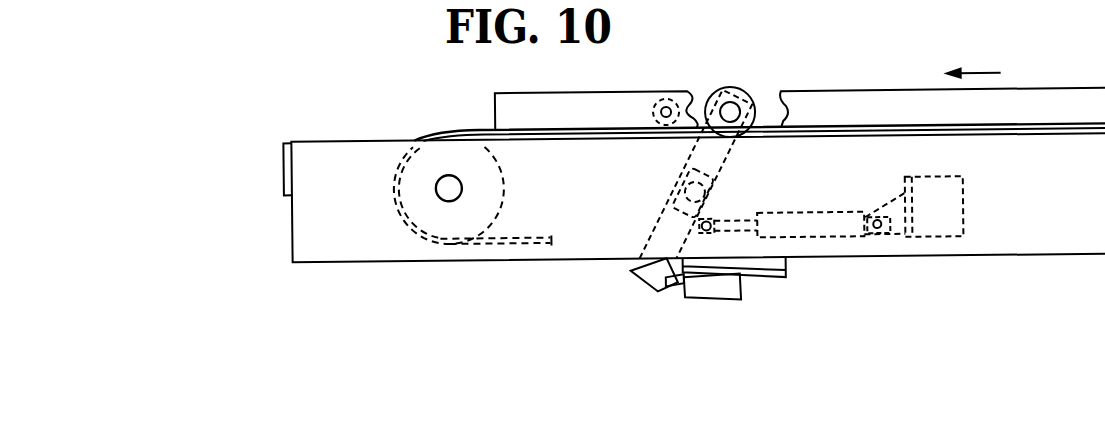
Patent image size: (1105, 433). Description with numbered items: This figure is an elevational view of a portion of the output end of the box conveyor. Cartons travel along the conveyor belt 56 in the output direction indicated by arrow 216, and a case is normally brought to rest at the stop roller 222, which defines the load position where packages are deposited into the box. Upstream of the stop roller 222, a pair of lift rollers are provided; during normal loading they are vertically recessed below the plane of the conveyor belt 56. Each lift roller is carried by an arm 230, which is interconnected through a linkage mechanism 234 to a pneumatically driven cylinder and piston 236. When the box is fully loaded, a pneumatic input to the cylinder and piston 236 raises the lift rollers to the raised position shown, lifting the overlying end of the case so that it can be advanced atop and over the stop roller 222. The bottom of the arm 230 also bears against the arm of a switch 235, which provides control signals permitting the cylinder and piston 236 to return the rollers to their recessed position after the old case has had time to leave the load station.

The conveyor belt 56 is at (466, 128).
The stop roller 222 is at (702, 78).
The arm 230 is at (694, 156).
The linkage mechanism 234 is at (710, 205).
The switch 235 is at (700, 287).
The pneumatically driven cylinder and piston 236 is at (811, 215).
The arrow indicating output direction 216 is at (1002, 73).